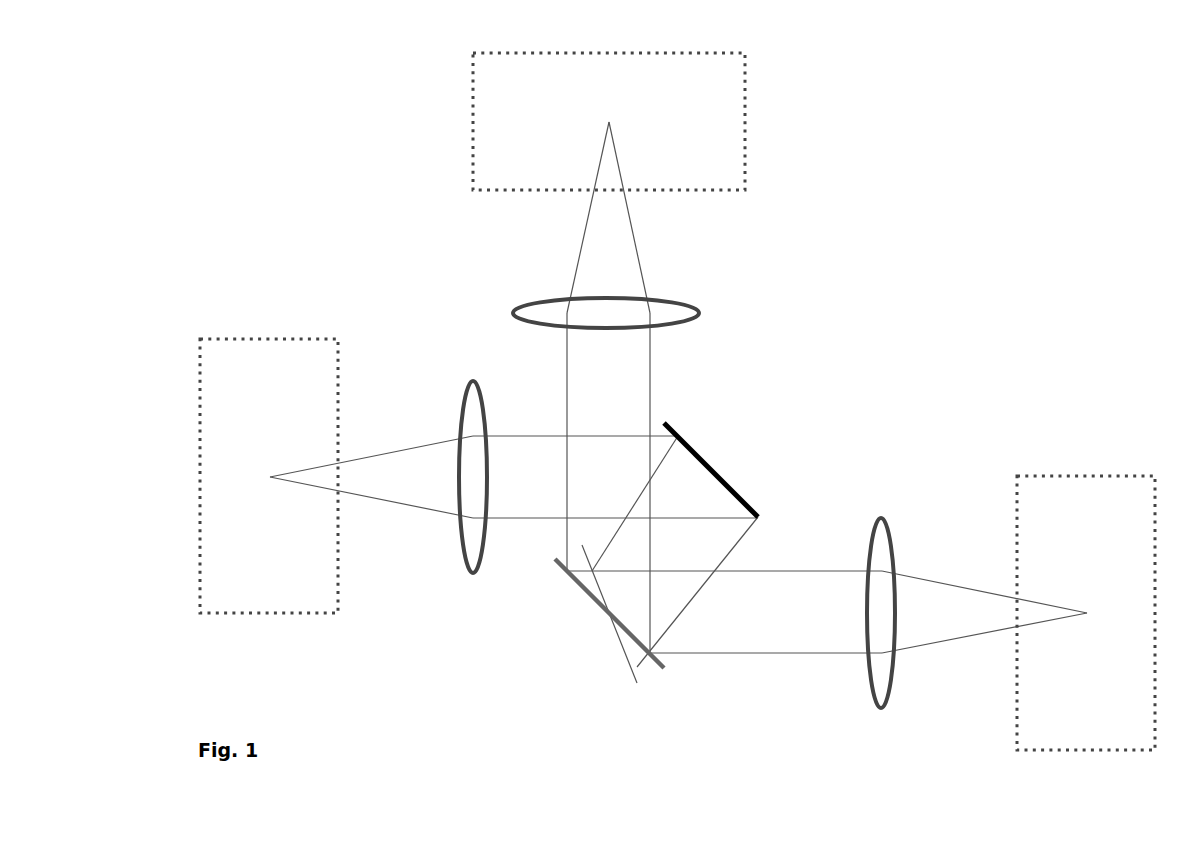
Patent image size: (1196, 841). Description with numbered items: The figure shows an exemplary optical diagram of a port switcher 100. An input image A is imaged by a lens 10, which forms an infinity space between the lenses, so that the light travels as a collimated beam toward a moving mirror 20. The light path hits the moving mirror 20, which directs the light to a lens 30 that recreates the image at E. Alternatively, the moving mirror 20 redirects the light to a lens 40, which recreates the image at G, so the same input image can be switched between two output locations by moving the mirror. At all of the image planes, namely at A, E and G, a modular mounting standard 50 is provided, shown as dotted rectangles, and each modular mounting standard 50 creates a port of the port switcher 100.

The port switcher 100 is at (663, 401).
The lens 10 is at (884, 583).
The moving mirror 20 is at (609, 625).
The lens 30 is at (606, 296).
The lens 40 is at (457, 462).
The modular mounting standard 50 is at (663, 401).